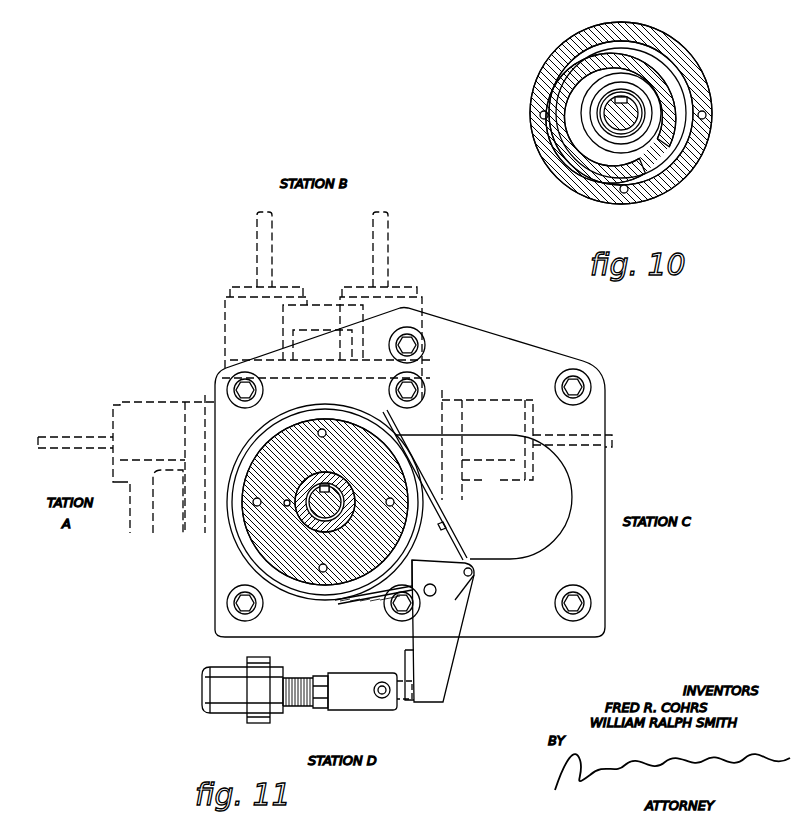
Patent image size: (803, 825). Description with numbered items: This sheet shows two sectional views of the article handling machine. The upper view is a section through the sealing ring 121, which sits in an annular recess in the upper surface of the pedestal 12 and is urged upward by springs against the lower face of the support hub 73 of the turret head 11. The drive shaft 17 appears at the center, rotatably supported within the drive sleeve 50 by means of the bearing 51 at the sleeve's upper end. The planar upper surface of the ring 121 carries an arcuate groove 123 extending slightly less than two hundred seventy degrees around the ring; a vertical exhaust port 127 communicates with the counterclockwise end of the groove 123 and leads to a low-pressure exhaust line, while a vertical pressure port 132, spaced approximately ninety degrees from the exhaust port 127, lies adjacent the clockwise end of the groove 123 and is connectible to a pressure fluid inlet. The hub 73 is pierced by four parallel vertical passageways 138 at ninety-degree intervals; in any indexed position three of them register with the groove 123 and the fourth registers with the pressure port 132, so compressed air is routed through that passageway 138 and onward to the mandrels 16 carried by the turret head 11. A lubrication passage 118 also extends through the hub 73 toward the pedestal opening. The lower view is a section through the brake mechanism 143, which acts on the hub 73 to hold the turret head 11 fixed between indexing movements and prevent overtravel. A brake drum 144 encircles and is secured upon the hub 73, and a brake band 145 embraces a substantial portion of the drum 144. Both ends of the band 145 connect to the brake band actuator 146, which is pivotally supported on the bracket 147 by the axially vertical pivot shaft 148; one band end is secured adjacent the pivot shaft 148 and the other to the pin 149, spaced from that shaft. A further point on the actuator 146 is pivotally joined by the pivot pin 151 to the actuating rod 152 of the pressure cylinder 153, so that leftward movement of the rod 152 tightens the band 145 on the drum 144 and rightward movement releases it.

In FIG. 11, the turret head 11 is at (432, 388).
In FIG. 11, the pedestal 12 is at (570, 491).
In FIG. 11, the mandrels 16 is at (384, 244).
In FIG. 10, the drive shaft 17 is at (606, 118).
In FIG. 11, the drive shaft 17 is at (343, 500).
In FIG. 10, the drive sleeve 50 is at (600, 133).
In FIG. 11, the drive sleeve 50 is at (332, 484).
In FIG. 11, the bearing 51 is at (338, 483).
In FIG. 11, the support hub 73 is at (395, 473).
In FIG. 11, the lubrication passage 118 is at (286, 508).
In FIG. 10, the sealing ring 121 is at (700, 148).
In FIG. 10, the arcuate groove 123 is at (706, 114).
In FIG. 10, the exhaust port 127 is at (540, 116).
In FIG. 10, the pressure port 132 is at (620, 192).
In FIG. 11, the vertical passageways 138 is at (318, 433).
In FIG. 11, the brake mechanism 143 is at (462, 668).
In FIG. 11, the brake drum 144 is at (248, 541).
In FIG. 11, the brake band 145 is at (444, 519).
In FIG. 11, the brake band actuator 146 is at (462, 601).
In FIG. 11, the bracket 147 is at (430, 565).
In FIG. 11, the pivot shaft 148 is at (430, 597).
In FIG. 11, the pin 149 is at (473, 572).
In FIG. 11, the pivot pin 151 is at (390, 697).
In FIG. 11, the actuating rod 152 is at (345, 700).
In FIG. 11, the pressure cylinder 153 is at (228, 708).